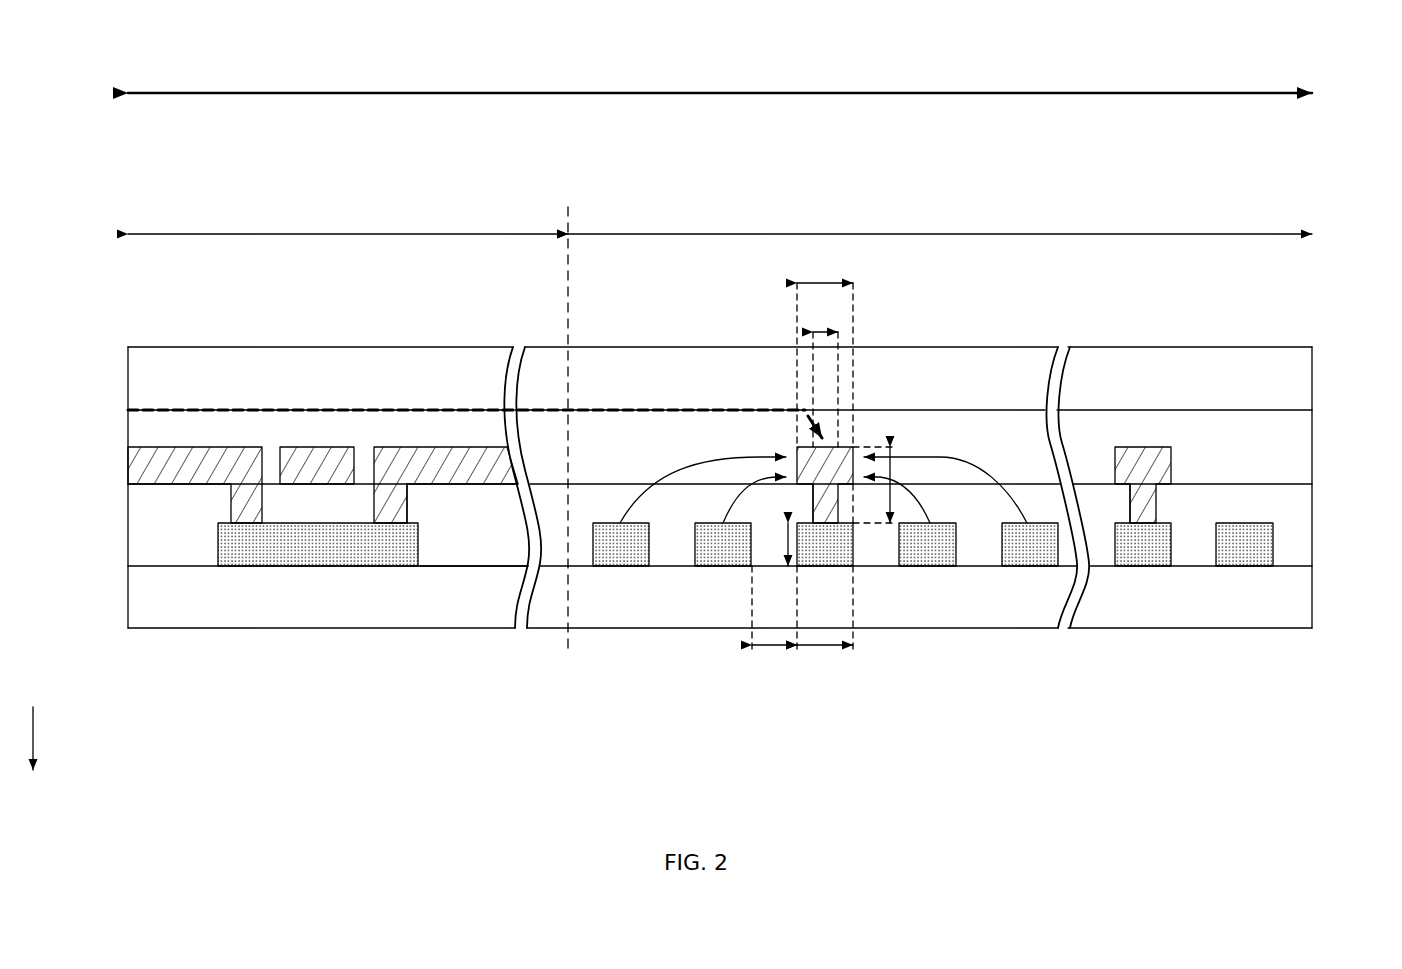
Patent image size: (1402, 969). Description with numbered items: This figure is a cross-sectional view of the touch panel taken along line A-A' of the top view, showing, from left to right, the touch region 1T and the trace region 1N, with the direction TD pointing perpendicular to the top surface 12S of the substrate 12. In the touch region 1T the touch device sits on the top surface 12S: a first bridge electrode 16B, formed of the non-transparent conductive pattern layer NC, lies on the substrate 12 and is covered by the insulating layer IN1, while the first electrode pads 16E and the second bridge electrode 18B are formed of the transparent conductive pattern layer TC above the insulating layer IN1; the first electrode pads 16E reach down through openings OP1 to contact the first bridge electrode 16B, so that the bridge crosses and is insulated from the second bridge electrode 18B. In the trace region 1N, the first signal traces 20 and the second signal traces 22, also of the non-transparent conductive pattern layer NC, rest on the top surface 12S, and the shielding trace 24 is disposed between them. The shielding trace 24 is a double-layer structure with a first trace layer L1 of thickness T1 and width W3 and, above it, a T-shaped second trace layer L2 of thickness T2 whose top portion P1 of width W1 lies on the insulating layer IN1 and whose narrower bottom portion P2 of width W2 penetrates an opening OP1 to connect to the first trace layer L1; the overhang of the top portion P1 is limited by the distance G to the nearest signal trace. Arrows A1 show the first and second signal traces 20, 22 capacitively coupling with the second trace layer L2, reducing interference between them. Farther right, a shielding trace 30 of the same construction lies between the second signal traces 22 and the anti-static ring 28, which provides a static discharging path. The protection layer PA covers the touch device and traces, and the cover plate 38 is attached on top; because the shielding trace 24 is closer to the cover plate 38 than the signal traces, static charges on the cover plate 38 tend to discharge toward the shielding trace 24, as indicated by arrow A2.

The substrate 12 is at (316, 612).
The top surface of substrate 12S is at (487, 567).
The first bridge electrode 16B is at (253, 547).
The first electrode pad 16E is at (437, 458).
The second bridge electrode 18B is at (298, 458).
The first signal trace 20 is at (617, 548).
The second signal trace 22 is at (937, 553).
The shielding trace 24 is at (947, 732).
The anti-static ring 28 is at (1250, 550).
The shielding trace 30 is at (1210, 682).
The cover plate 38 is at (316, 392).
The first trace layer L1 is at (822, 548).
The second trace layer L2 is at (885, 682).
The top portion P1 is at (835, 483).
The bottom portion P2 is at (827, 467).
The opening OP1 is at (418, 503).
The transparent conductive pattern layer TC is at (1180, 460).
The protection layer PA is at (1285, 448).
The insulating layer IN1 is at (1285, 500).
The non-transparent conductive pattern layer NC is at (1284, 543).
The arrow A1 is at (718, 455).
The arrow A2 is at (652, 410).
The width of top portion W1 is at (825, 452).
The width of bottom portion W2 is at (825, 375).
The width of first trace layer W3 is at (825, 661).
The distance G is at (774, 622).
The thickness of first trace layer T1 is at (770, 544).
The thickness of second trace layer T2 is at (873, 485).
The touch region 1T is at (348, 217).
The trace region 1N is at (940, 217).
The direction TD is at (32, 756).
The line A-A' A is at (723, 93).